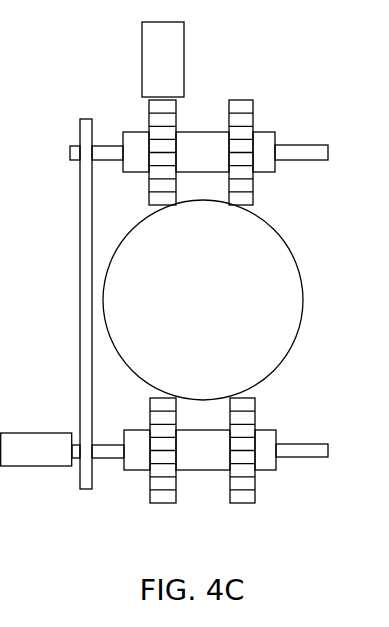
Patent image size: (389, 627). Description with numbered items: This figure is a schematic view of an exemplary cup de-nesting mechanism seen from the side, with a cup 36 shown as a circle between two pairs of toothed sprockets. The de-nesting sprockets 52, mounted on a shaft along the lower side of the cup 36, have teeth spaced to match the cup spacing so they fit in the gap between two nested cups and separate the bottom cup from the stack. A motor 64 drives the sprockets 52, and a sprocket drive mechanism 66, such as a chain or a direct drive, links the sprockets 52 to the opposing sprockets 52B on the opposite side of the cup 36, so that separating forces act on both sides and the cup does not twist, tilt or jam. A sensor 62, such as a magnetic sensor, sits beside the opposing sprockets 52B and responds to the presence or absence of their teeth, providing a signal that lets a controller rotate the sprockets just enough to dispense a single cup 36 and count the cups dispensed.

The sensor 62 is at (163, 59).
The opposing sprockets 52B is at (193, 98).
The cup 36 is at (203, 300).
The sprocket drive mechanism 66 is at (77, 388).
The motor 64 is at (36, 449).
The de-nesting sprockets 52 is at (241, 523).